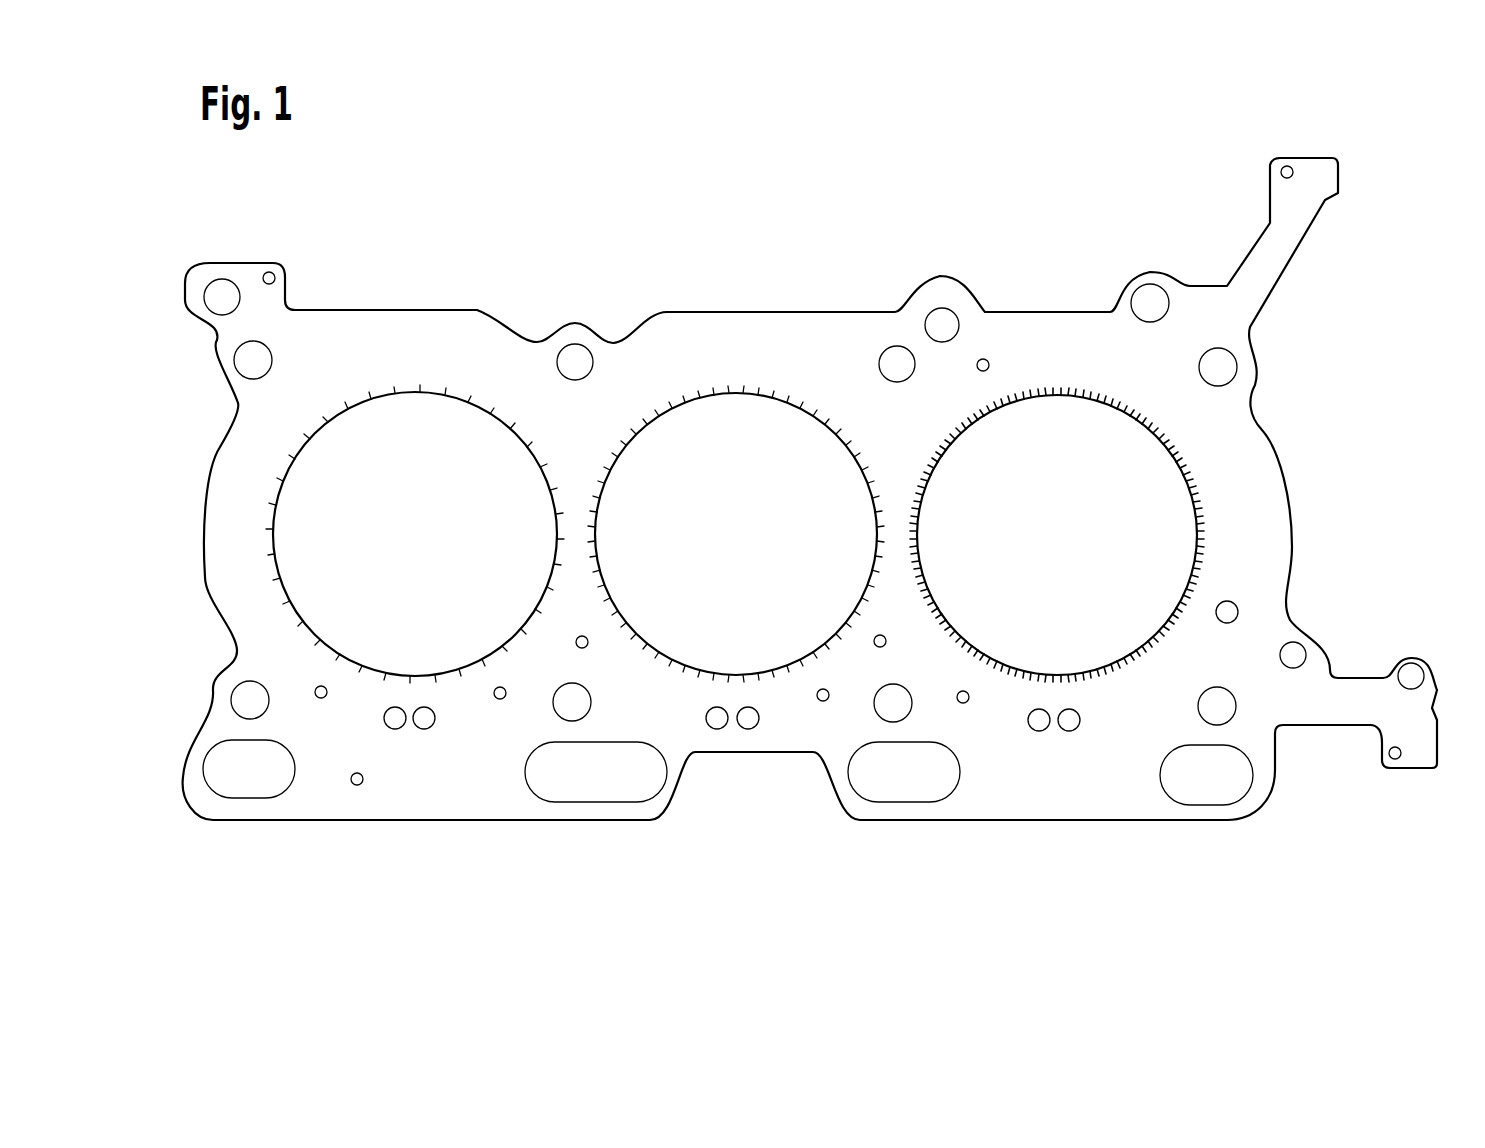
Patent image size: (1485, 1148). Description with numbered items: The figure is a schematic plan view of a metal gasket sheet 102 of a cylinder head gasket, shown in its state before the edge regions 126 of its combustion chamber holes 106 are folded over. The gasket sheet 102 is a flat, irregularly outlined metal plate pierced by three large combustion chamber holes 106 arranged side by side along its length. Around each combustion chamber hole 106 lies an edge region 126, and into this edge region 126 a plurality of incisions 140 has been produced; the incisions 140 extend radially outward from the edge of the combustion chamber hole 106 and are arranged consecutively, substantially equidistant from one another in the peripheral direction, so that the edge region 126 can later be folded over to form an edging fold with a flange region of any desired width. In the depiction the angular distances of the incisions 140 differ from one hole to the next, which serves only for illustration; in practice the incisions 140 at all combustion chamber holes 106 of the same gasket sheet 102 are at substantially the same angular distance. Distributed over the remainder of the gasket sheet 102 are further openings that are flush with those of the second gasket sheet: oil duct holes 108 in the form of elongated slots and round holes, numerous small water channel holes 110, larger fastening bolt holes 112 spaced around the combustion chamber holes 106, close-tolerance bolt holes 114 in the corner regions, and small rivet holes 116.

The first metal gasket sheet 102 is at (812, 340).
The combustion chamber hole 106 is at (357, 430).
The oil duct hole 108 is at (942, 325).
The water channel hole 110 is at (983, 365).
The fastening bolt hole 112 is at (575, 362).
The close-tolerance bolt hole 114 is at (220, 297).
The rivet hole 116 is at (269, 278).
The edge region 126 is at (474, 392).
The incision 140 is at (437, 387).